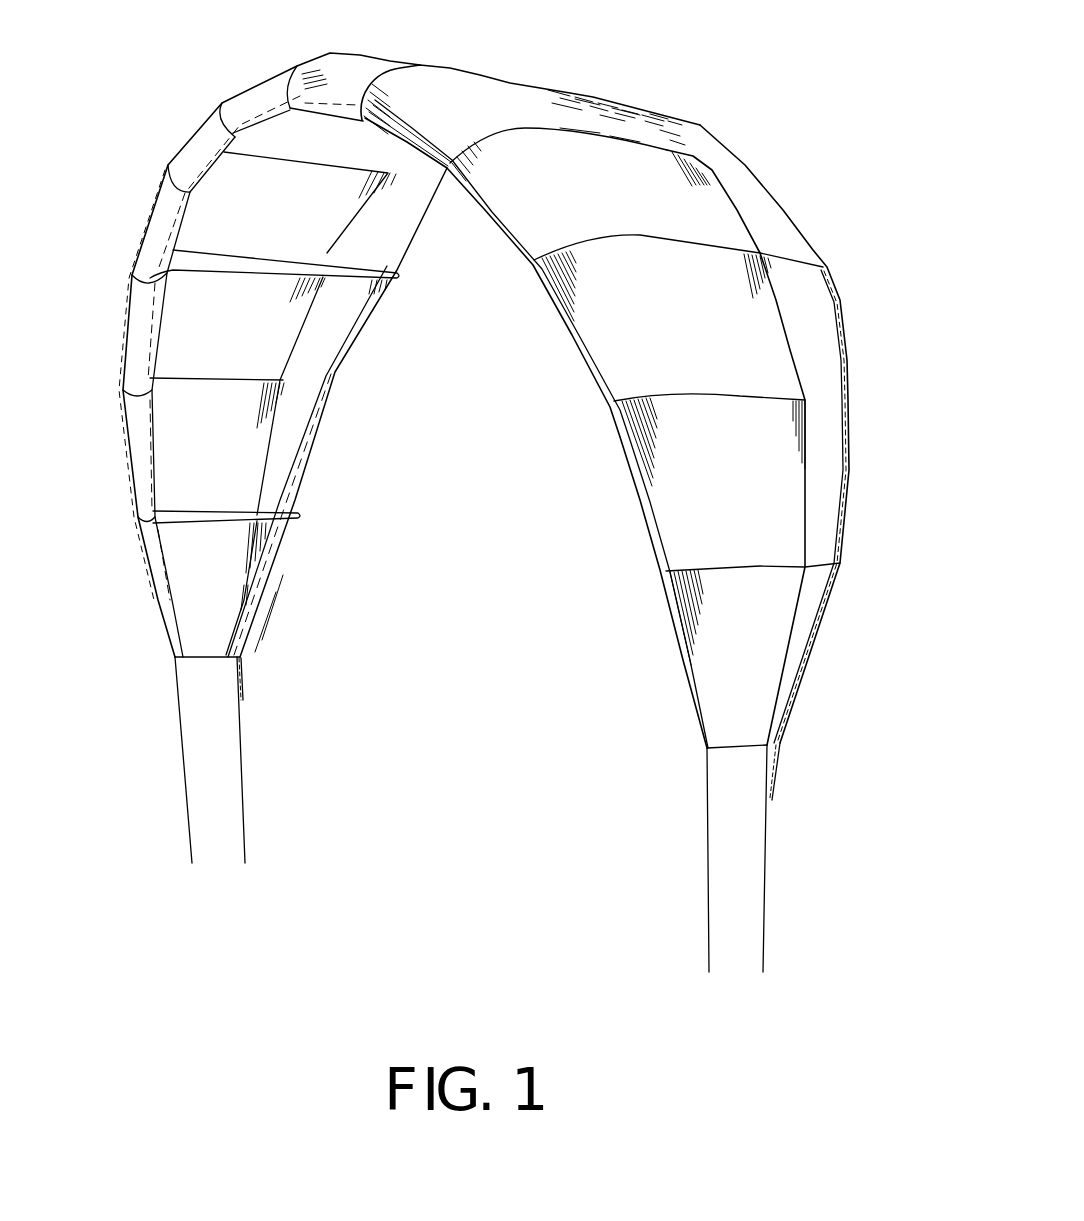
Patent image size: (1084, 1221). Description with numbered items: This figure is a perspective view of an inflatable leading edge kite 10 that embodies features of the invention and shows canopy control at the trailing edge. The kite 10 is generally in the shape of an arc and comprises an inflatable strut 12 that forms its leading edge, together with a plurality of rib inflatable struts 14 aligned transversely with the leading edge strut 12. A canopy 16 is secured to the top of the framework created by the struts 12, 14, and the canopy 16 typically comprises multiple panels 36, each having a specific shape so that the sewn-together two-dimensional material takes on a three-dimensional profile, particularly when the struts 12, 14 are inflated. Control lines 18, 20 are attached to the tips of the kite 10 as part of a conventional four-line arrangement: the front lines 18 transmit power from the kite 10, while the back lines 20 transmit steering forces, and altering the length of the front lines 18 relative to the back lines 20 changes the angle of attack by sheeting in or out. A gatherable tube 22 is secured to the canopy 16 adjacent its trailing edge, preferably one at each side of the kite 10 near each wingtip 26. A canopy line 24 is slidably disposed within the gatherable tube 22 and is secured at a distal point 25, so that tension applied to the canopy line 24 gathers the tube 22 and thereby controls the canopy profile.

The kite 10 is at (172, 107).
The inflatable strut 12 is at (150, 208).
The rib inflatable struts 14 is at (300, 278).
The canopy 16 is at (507, 90).
The front lines 18 is at (182, 790).
The back lines 20 is at (243, 783).
The gatherable tube 22 is at (273, 562).
The canopy line 24 is at (248, 668).
The distal point 25 is at (823, 267).
The wingtip 26 is at (672, 763).
The panels 36 is at (701, 330).